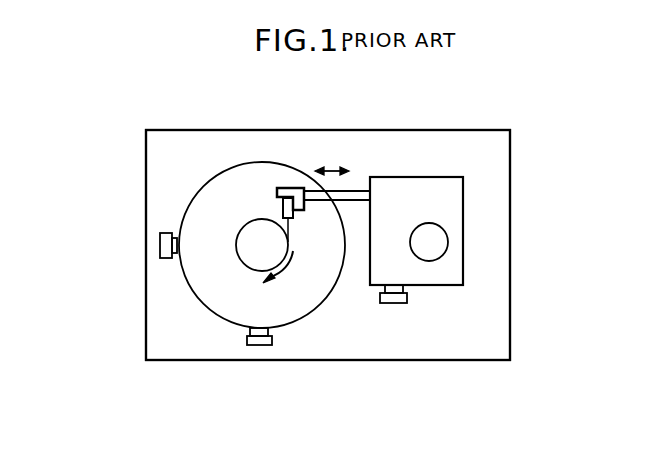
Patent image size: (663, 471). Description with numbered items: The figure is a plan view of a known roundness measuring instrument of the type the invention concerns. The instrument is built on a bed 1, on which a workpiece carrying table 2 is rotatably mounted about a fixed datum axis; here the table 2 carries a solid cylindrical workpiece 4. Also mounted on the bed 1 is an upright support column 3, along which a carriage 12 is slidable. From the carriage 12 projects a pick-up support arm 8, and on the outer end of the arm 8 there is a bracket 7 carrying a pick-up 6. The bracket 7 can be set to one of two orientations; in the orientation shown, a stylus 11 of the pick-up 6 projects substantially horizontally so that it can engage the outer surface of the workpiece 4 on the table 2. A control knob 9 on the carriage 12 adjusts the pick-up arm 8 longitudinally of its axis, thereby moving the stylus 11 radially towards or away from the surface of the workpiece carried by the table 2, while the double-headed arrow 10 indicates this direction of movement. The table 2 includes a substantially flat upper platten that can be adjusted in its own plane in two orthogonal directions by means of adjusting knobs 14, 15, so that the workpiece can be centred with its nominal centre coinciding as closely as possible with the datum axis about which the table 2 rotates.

The bed 1 is at (188, 342).
The workpiece carrying table 2 is at (185, 152).
The upright support column 3 is at (438, 245).
The solid cylindrical workpiece 4 is at (240, 252).
The pick-up 6 is at (281, 197).
The bracket 7 is at (291, 188).
The pick-up support arm 8 is at (347, 197).
The control knob 9 is at (400, 302).
The direction of movement arrow 10 is at (342, 167).
The stylus 11 is at (288, 242).
The carriage 12 is at (432, 188).
The adjusting knob 14 is at (162, 238).
The adjusting knob 15 is at (264, 344).